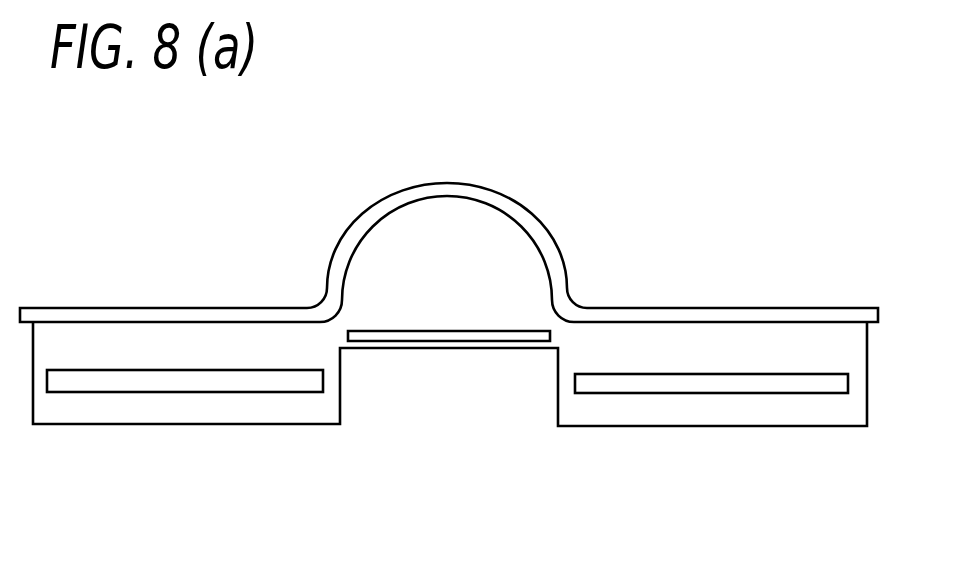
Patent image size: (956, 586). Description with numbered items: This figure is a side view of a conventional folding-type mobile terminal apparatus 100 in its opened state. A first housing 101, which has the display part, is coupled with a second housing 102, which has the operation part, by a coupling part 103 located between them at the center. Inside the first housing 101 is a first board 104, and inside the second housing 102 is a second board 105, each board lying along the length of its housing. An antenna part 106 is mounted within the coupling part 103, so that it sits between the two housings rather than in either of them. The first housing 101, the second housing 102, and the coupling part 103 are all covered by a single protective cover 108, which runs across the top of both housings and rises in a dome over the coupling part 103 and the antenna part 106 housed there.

The folding-type mobile terminal apparatus 100 is at (687, 209).
The first housing 101 is at (263, 417).
The second housing 102 is at (672, 415).
The coupling part 103 is at (408, 326).
The first board 104 is at (172, 386).
The second board 105 is at (798, 388).
The antenna part 106 is at (503, 333).
The protective cover 108 is at (220, 307).